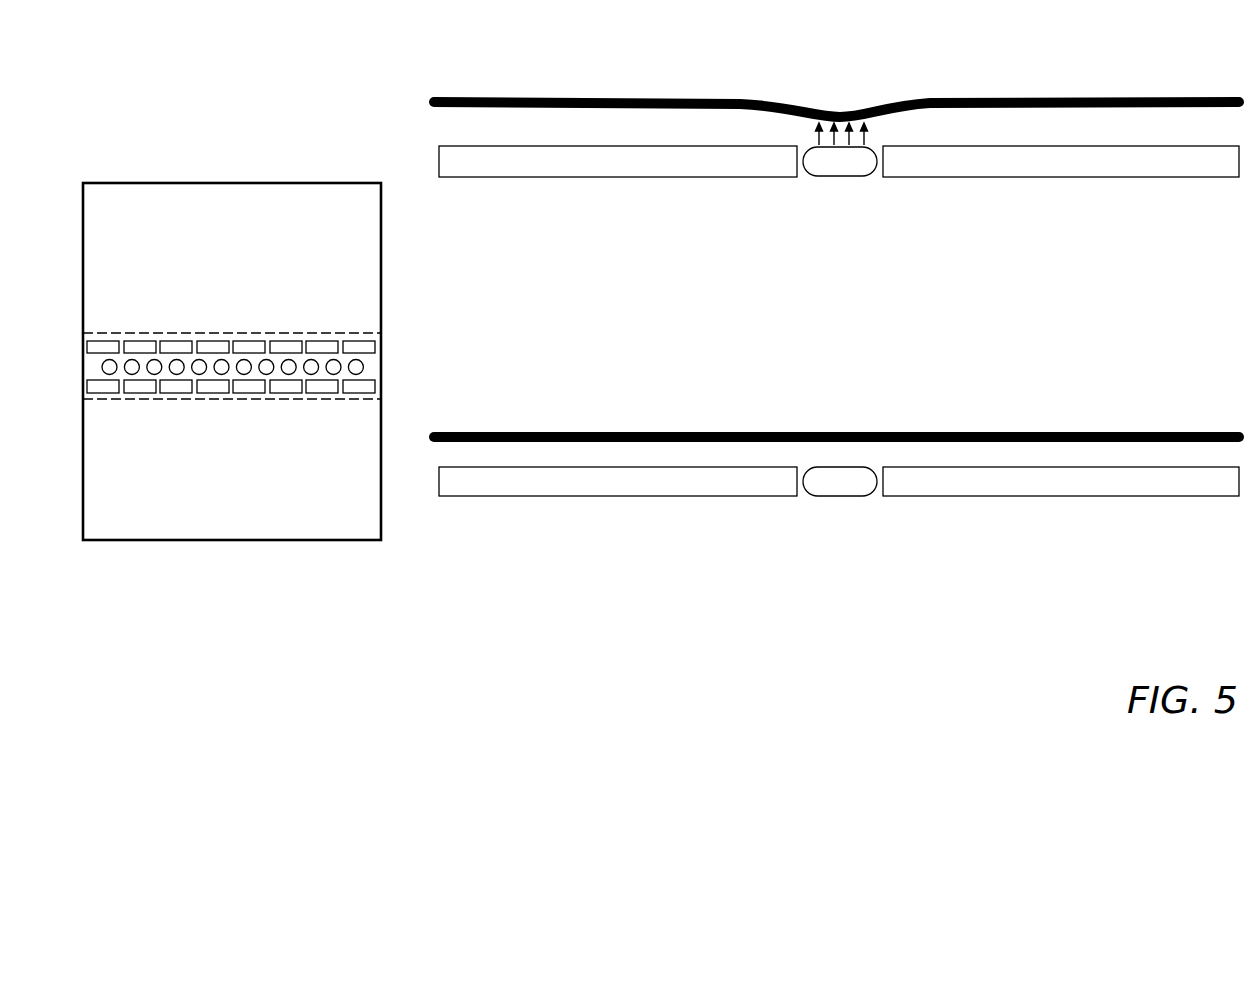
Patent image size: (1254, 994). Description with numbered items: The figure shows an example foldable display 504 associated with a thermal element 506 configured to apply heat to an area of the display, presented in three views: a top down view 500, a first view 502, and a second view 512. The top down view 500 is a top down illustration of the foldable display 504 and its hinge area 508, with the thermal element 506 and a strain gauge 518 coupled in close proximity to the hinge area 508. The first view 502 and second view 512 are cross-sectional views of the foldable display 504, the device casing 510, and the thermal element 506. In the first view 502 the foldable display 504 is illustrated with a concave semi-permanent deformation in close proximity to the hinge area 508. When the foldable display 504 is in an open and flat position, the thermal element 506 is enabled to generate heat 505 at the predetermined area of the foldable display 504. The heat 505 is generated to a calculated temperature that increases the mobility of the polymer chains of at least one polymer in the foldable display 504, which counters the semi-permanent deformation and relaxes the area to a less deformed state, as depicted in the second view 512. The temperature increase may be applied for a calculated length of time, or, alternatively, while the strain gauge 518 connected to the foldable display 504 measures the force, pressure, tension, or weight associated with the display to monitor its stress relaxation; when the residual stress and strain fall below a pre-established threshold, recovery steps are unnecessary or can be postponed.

The top down view 500 is at (250, 148).
The first view 502 is at (870, 28).
The foldable display 504 is at (381, 282).
The heat 505 is at (868, 132).
The thermal element 506 is at (142, 349).
The hinge area 508 is at (381, 333).
The device casing 510 is at (586, 178).
The second view 512 is at (870, 355).
The strain gauge 518 is at (360, 369).